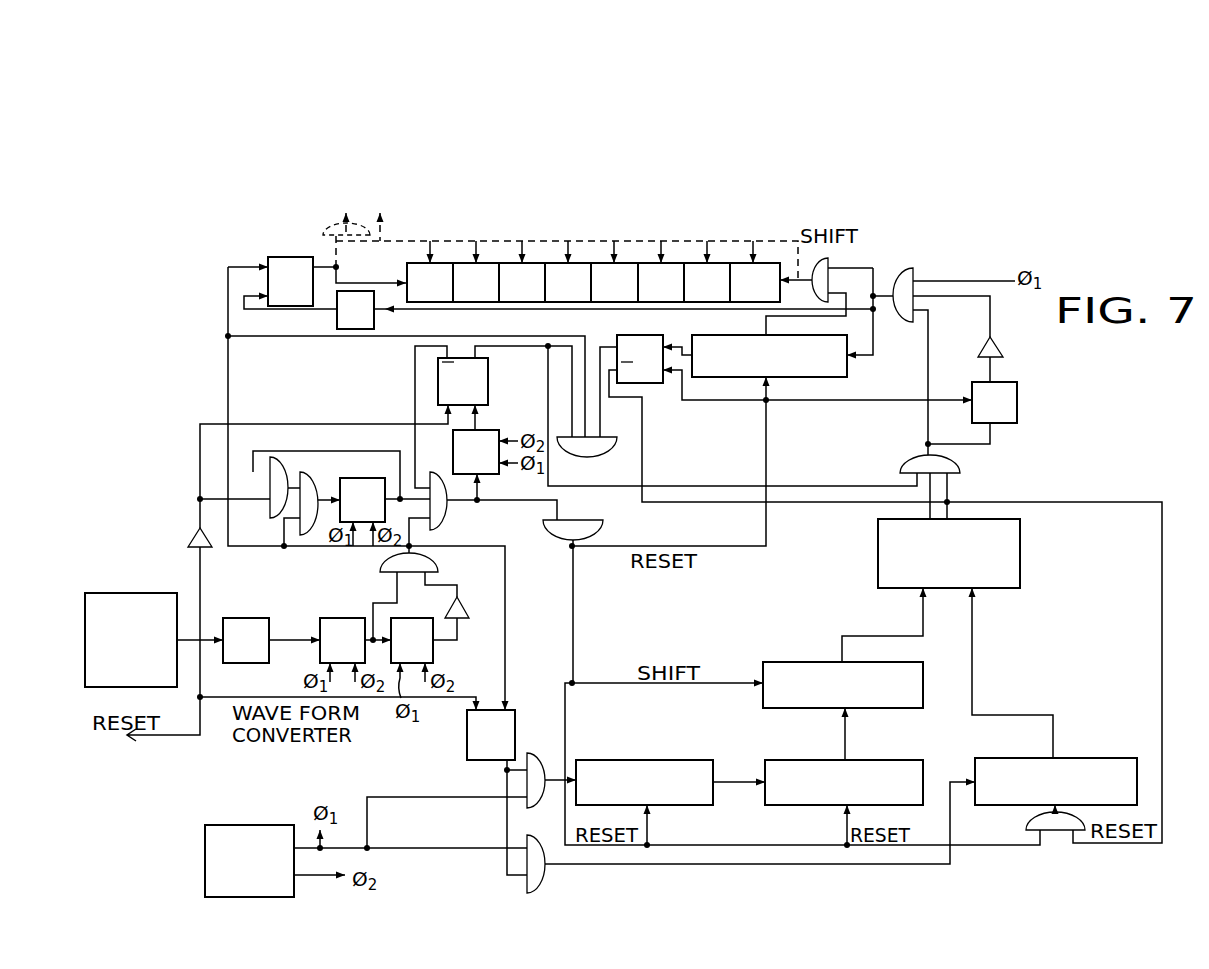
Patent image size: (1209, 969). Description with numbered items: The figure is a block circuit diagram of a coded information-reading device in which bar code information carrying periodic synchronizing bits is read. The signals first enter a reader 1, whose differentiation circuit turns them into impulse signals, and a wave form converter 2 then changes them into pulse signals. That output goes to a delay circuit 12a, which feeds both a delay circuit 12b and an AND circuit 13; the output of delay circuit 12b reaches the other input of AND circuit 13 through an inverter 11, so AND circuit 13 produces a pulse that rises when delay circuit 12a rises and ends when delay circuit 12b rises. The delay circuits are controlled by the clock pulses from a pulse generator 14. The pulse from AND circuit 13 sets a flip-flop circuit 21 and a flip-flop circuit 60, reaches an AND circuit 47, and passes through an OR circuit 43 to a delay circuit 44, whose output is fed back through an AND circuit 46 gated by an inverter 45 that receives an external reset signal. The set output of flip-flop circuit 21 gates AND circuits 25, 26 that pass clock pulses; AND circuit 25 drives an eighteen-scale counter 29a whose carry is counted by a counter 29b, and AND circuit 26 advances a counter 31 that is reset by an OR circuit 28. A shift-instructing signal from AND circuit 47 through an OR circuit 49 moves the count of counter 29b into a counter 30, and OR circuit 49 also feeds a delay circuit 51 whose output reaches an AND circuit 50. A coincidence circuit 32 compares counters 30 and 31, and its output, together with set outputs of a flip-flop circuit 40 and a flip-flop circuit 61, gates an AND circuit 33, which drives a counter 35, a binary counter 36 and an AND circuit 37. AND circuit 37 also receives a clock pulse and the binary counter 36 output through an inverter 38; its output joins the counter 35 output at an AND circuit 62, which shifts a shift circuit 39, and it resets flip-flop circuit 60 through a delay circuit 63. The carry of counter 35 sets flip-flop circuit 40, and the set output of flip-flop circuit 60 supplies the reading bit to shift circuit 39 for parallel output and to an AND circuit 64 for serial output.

The reader 1 is at (139, 593).
The wave form converter 2 is at (239, 698).
The inverter 11 is at (462, 606).
The delay circuit 12a is at (343, 618).
The delay circuit 12b is at (433, 651).
The AND circuit 13 is at (443, 564).
The pulse generator 14 is at (250, 826).
The flip-flop circuit 21 is at (515, 715).
The AND circuit 25 is at (540, 767).
The AND circuit 26 is at (541, 848).
The OR circuit 28 is at (1055, 832).
The first counter 29a is at (651, 760).
The 100-scale counter 29b is at (896, 760).
The 100-scale counter 30 is at (803, 662).
The 100-scale counter 31 is at (1100, 758).
The coincidence circuit 32 is at (1020, 543).
The AND circuit 33 is at (955, 462).
The 16-scale counter 35 is at (847, 370).
The binary counter 36 is at (1017, 403).
The AND circuit 37 is at (908, 280).
The inverter 38 is at (993, 340).
The shift circuit 39 is at (593, 298).
The flip-flop circuit 40 is at (638, 340).
The OR circuit 43 is at (306, 484).
The delay circuit 44 is at (362, 478).
The inverter 45 is at (196, 533).
The AND circuit 46 is at (270, 492).
The AND circuit 47 is at (458, 501).
The OR circuit 49 is at (565, 540).
The AND circuit 50 is at (597, 452).
The delay circuit 51 is at (490, 430).
The flip-flop circuit 60 is at (291, 257).
The flip-flop circuit 61 is at (488, 370).
The AND circuit 62 is at (825, 272).
The delay circuit 63 is at (376, 320).
The AND circuit 64 is at (348, 239).